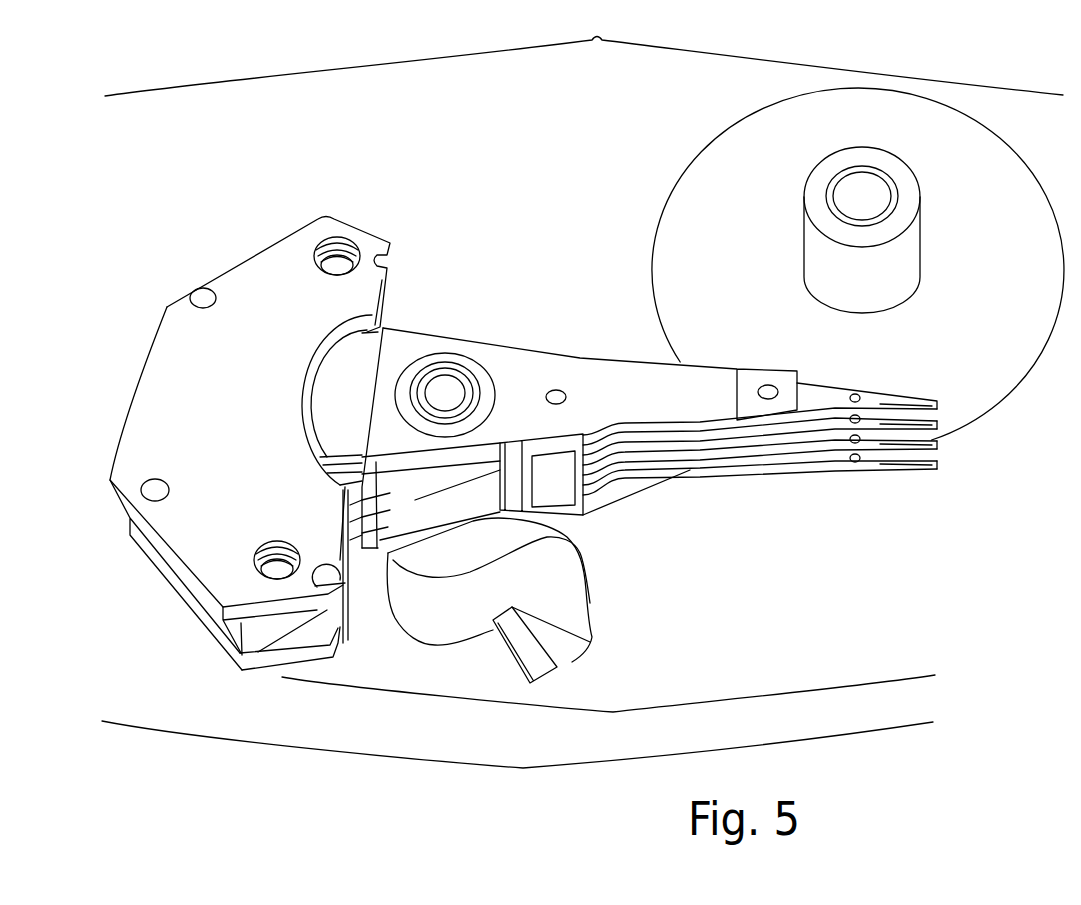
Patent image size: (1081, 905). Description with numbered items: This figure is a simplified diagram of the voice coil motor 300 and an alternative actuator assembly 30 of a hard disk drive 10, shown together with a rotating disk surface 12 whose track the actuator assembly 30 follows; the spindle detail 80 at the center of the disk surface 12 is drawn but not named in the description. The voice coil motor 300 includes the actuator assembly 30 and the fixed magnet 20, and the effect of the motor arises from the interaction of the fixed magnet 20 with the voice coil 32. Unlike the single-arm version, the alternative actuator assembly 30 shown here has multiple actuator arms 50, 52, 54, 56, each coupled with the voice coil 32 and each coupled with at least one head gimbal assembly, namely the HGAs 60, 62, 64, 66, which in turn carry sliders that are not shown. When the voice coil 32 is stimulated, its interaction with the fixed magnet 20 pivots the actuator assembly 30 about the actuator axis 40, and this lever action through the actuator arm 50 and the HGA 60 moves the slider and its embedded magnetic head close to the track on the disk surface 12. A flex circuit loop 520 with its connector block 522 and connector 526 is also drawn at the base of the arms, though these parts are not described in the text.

The hard disk drive 10 is at (584, 52).
The rotating disk surface 12 is at (970, 143).
The fixed magnet 20 is at (267, 277).
The actuator assembly 30 is at (608, 708).
The voice coil 32 is at (348, 452).
The actuator axis 40 is at (447, 383).
The actuator arm 50 is at (667, 378).
The actuator arm 52 is at (723, 440).
The actuator arm 54 is at (700, 460).
The actuator arm 56 is at (680, 480).
The HGA 60 is at (903, 402).
The HGA 62 is at (913, 418).
The HGA 64 is at (937, 438).
The HGA 66 is at (887, 455).
The spindle hub 80 is at (910, 253).
The voice coil motor 300 is at (517, 761).
The flex circuit loop 520 is at (593, 613).
The flex circuit connector block 522 is at (555, 453).
The flex circuit connector 526 is at (553, 685).